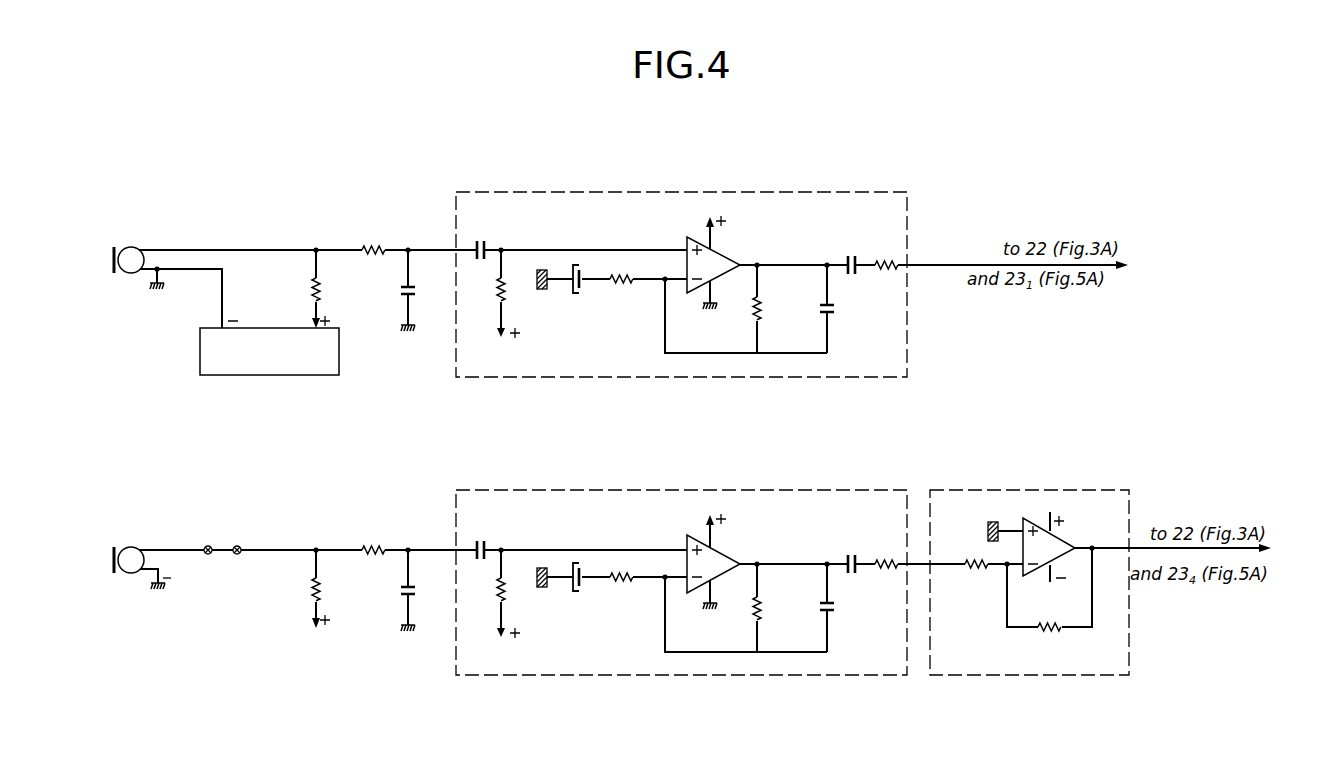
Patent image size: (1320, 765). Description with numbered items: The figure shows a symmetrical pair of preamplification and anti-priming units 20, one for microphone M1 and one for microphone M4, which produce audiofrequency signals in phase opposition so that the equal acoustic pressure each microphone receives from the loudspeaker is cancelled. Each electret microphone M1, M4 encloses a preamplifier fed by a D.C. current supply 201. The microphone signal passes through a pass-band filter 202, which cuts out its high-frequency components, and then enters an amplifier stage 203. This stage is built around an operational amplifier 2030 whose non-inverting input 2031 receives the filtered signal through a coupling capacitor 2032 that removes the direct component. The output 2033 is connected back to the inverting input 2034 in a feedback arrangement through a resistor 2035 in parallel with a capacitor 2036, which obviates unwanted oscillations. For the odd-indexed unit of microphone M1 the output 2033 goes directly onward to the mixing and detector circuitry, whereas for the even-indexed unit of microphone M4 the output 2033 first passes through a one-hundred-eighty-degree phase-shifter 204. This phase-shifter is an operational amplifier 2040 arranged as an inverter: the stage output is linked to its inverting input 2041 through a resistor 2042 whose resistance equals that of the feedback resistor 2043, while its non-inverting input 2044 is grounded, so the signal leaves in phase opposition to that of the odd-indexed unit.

The preamplification and anti-priming unit 20 is at (258, 219).
The microphone M1 is at (128, 276).
The microphone M4 is at (128, 576).
The D.C. current supply 201 is at (275, 376).
The pass-band filter 202 is at (398, 289).
The amplifier stage 203 is at (709, 192).
The operational amplifier 2030 is at (709, 262).
The non-inverting input 2031 is at (687, 250).
The coupling capacitor 2032 is at (494, 225).
The output 2033 is at (943, 261).
The inverting input 2034 is at (686, 282).
The resistor 2035 is at (761, 312).
The capacitor 2036 is at (837, 310).
The 180° phase-shifter 204 is at (1047, 490).
The operational amplifier 2040 is at (1062, 540).
The inverting input 2041 is at (1019, 568).
The resistor 2042 is at (975, 560).
The feedback resistor 2043 is at (1050, 630).
The non-inverting input 2044 is at (1007, 516).